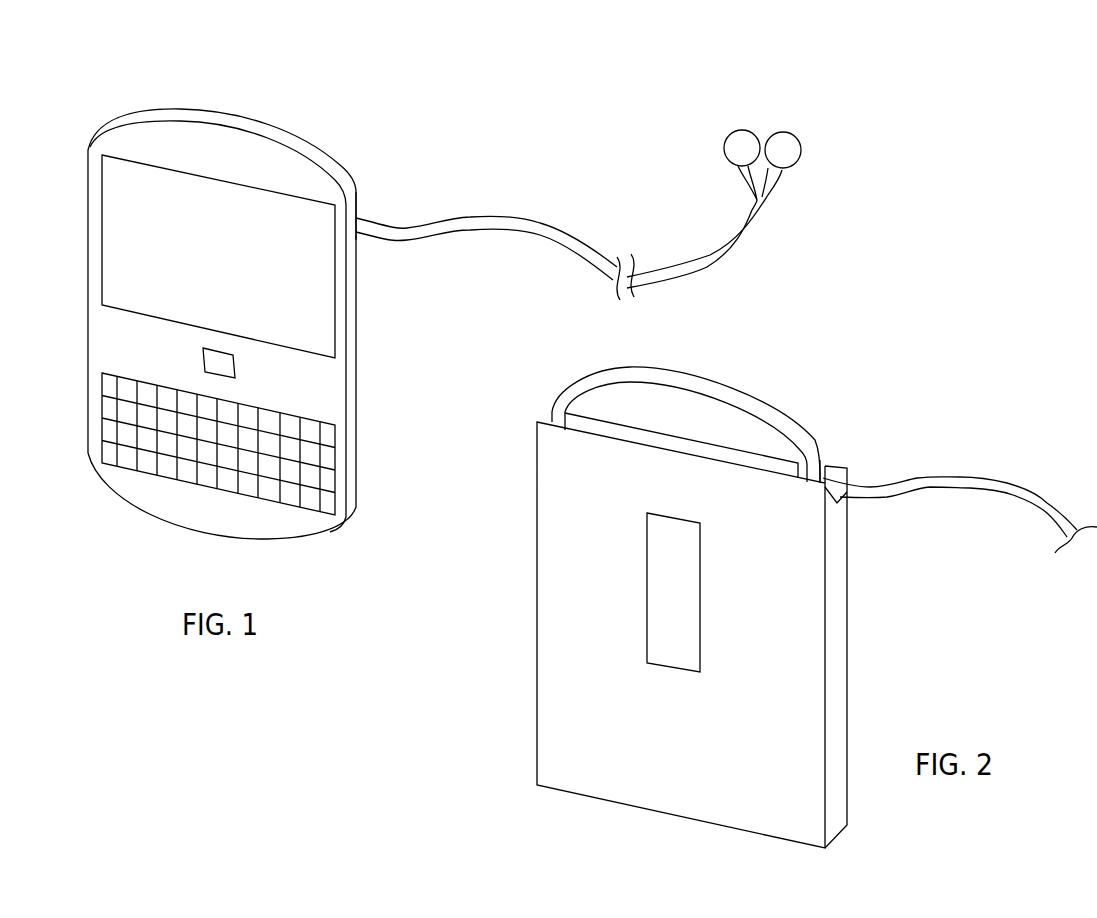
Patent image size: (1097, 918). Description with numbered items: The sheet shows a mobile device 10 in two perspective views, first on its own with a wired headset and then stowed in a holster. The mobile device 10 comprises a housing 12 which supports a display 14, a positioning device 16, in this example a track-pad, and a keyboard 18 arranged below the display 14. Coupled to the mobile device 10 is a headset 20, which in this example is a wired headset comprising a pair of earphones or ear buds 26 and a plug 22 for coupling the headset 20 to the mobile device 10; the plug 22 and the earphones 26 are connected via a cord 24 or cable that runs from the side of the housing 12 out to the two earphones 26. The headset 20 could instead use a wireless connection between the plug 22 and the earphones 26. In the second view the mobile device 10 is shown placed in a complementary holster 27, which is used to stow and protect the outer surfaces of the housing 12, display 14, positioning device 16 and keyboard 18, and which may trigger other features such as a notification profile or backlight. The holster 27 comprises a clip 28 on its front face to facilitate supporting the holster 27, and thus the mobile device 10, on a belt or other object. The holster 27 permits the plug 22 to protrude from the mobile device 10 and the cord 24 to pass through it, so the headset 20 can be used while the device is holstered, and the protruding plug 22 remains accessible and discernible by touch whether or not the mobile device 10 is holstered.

In FIG. 1, the mobile device 10 is at (348, 145).
In FIG. 2, the mobile device 10 is at (800, 403).
In FIG. 1, the housing 12 is at (357, 198).
In FIG. 2, the housing 12 is at (823, 452).
In FIG. 1, the display 14 is at (317, 278).
In FIG. 1, the positioning device 16 is at (227, 368).
In FIG. 1, the keyboard 18 is at (307, 448).
In FIG. 1, the headset 20 is at (599, 189).
In FIG. 2, the headset 20 is at (960, 474).
In FIG. 1, the plug 22 is at (365, 230).
In FIG. 1, the cord 24 is at (517, 227).
In FIG. 2, the cord 24 is at (1017, 490).
In FIG. 1, the earphones 26 is at (760, 137).
In FIG. 2, the holster 27 is at (652, 635).
In FIG. 2, the clip 28 is at (687, 627).